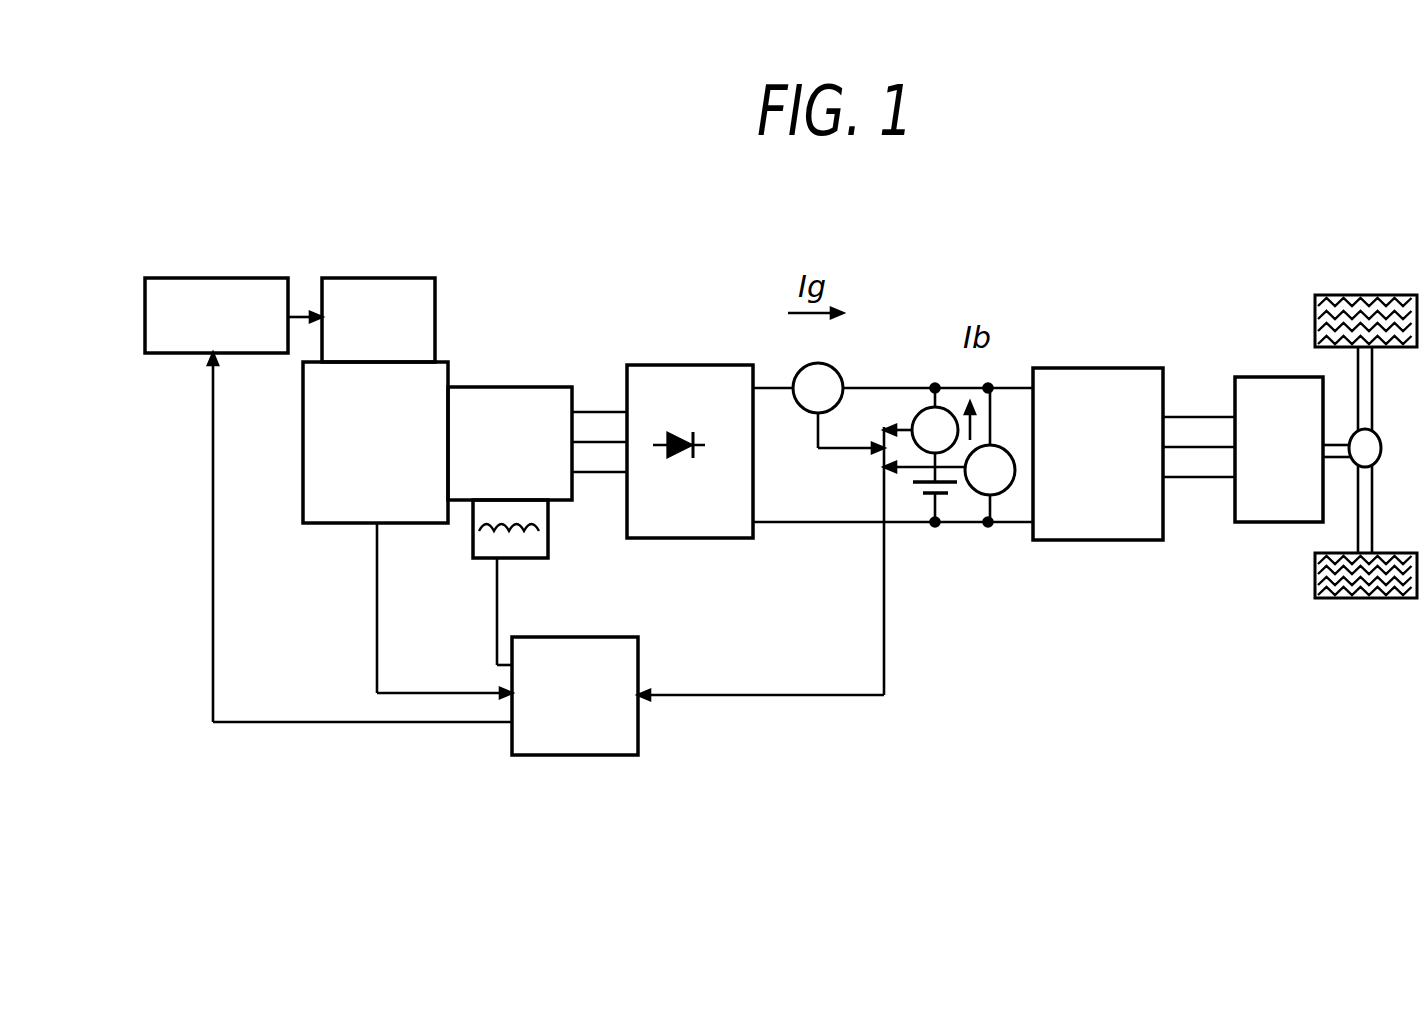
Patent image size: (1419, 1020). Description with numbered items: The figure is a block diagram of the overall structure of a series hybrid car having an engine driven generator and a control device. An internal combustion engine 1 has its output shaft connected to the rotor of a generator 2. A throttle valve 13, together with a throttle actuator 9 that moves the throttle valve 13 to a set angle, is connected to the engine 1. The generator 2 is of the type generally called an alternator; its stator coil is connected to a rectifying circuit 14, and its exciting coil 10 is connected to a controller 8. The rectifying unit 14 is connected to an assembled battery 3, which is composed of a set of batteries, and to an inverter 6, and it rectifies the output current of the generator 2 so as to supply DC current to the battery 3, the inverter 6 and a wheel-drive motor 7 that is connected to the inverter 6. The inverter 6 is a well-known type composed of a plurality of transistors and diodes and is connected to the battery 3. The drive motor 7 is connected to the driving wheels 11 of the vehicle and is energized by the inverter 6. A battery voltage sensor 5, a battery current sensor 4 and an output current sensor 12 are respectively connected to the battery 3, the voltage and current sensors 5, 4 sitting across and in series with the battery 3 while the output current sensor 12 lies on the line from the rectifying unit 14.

The internal combustion engine 1 is at (342, 523).
The generator 2 is at (520, 387).
The assembled battery 3 is at (950, 492).
The battery current sensor 4 is at (918, 412).
The battery voltage sensor 5 is at (1003, 490).
The inverter 6 is at (1097, 368).
The wheel-drive motor 7 is at (1260, 377).
The controller 8 is at (638, 737).
The throttle actuator 9 is at (241, 278).
The exciting coil 10 is at (473, 530).
The driving wheels 11 is at (1373, 295).
The output current sensor 12 is at (835, 372).
The throttle valve 13 is at (376, 278).
The rectifying circuit 14 is at (687, 365).